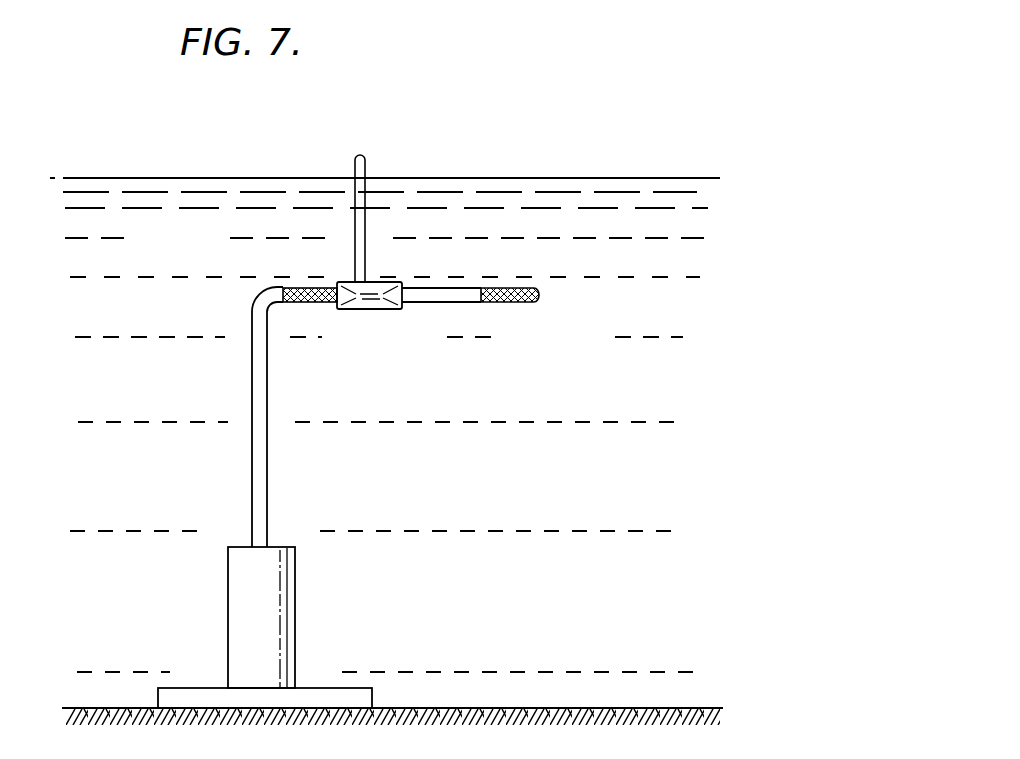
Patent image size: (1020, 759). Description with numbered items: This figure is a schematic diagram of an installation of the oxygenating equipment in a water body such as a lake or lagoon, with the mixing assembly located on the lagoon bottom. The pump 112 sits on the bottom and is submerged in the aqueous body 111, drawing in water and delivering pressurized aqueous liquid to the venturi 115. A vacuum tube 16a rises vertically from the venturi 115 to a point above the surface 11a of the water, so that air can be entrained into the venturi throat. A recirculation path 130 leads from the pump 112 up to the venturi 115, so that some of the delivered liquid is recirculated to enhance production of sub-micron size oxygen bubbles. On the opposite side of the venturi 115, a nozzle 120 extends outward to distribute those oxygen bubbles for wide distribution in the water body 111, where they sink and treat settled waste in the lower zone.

The surface of the water 11a is at (595, 176).
The aqueous body 111 is at (387, 432).
The vacuum tube 16a is at (366, 208).
The recirculation path 130 is at (306, 287).
The venturi 115 is at (372, 310).
The nozzle 120 is at (522, 305).
The pump 112 is at (273, 605).